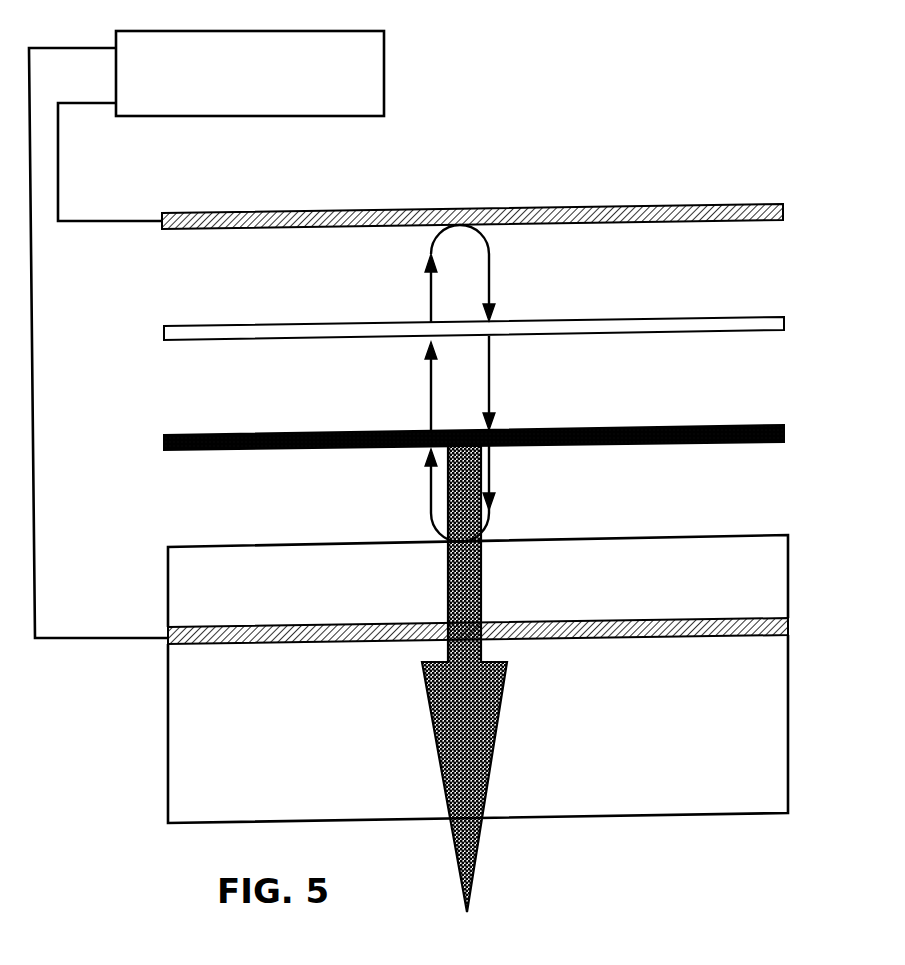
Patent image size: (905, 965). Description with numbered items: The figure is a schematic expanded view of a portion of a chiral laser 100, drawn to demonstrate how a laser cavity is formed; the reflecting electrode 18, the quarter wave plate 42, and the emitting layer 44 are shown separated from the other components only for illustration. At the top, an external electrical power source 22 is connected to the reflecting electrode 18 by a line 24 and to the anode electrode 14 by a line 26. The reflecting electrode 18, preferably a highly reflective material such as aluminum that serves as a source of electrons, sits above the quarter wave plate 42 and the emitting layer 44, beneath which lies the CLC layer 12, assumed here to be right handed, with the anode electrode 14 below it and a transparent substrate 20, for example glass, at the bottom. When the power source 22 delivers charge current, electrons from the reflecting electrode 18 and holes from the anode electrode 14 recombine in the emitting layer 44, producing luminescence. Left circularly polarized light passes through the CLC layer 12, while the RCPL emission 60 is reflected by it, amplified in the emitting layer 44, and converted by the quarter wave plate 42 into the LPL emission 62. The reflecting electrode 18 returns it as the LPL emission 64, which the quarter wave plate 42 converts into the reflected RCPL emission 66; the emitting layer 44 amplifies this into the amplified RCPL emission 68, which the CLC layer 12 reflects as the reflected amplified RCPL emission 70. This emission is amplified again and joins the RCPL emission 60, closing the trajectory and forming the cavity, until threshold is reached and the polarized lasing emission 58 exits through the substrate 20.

The chiral laser 100 is at (543, 110).
The external electrical power source 22 is at (385, 70).
The line 24 is at (61, 187).
The line 26 is at (33, 313).
The reflecting electrode 18 is at (716, 205).
The quarter wave plate 42 is at (703, 317).
The emitting layer 44 is at (697, 425).
The CLC layer 12 is at (167, 548).
The anode electrode 14 is at (790, 622).
The transparent substrate 20 is at (168, 703).
The polarized lasing emission 58 is at (475, 873).
The RCPL emission 60 is at (428, 392).
The LPL emission 62 is at (428, 294).
The LPL emission 64 is at (492, 278).
The reflected RCPL emission 66 is at (492, 390).
The amplified RCPL emission 68 is at (492, 485).
The reflected amplified RCPL emission 70 is at (428, 498).